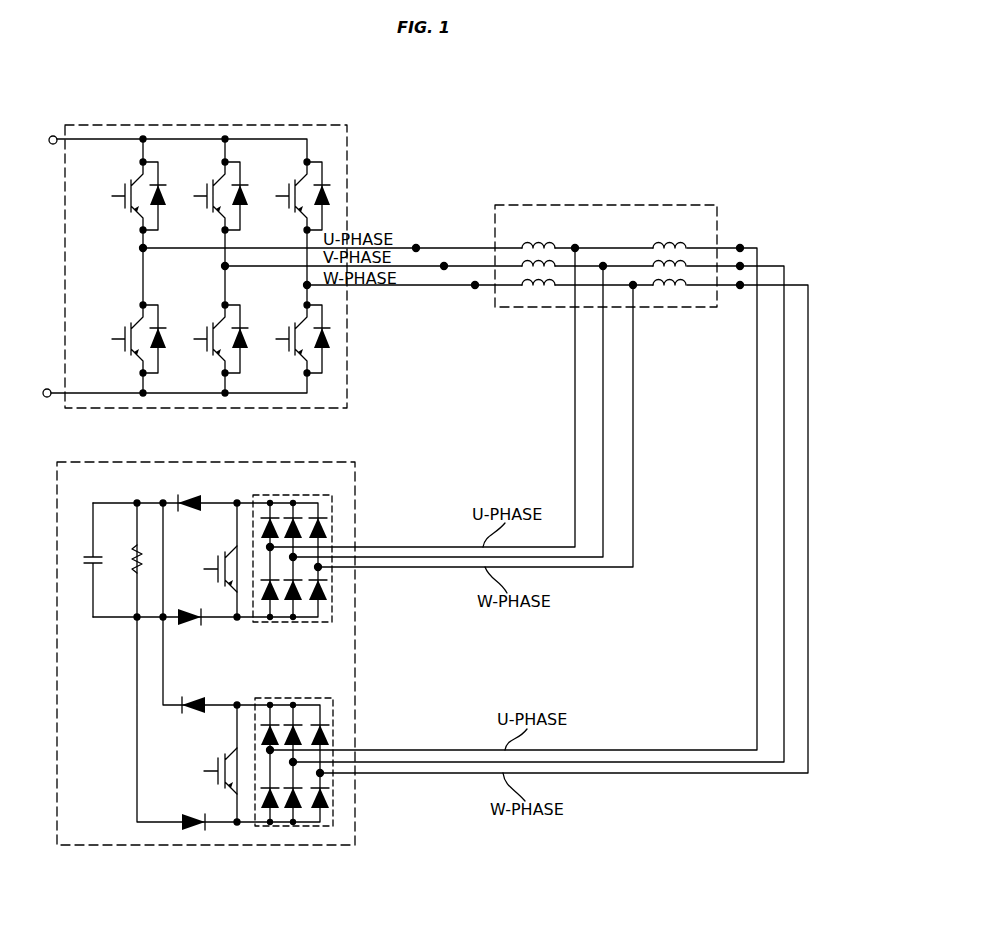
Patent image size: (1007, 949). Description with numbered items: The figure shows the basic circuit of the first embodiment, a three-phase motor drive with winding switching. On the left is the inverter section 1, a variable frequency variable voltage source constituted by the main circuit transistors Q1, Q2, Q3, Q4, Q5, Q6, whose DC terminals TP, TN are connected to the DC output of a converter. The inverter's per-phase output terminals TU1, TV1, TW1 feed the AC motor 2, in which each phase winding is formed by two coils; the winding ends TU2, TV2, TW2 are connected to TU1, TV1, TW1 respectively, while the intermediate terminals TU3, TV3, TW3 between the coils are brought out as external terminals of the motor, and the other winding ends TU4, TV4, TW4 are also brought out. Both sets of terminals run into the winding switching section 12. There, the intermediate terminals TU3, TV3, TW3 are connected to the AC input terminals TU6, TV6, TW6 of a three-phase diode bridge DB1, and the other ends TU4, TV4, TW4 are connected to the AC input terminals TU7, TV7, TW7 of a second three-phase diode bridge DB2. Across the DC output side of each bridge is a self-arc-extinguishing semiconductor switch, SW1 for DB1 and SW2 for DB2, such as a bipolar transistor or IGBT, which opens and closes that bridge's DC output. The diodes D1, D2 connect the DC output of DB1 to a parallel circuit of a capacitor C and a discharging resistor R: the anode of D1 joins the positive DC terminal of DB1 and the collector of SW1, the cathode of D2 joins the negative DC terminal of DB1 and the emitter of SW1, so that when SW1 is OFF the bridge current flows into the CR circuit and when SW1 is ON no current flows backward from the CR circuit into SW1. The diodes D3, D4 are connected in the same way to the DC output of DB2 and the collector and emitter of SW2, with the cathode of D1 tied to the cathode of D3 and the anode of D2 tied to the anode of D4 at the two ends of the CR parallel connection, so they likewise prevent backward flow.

The inverter section 1 is at (118, 125).
The AC motor 2 is at (515, 205).
The winding switching section 12 is at (140, 462).
The terminal TP is at (44, 128).
The terminal TN is at (40, 383).
The main circuit transistor Q1 is at (138, 196).
The main circuit transistor Q2 is at (220, 196).
The main circuit transistor Q3 is at (302, 196).
The main circuit transistor Q4 is at (138, 338).
The main circuit transistor Q5 is at (220, 338).
The main circuit transistor Q6 is at (302, 338).
The output terminal TU1 is at (117, 240).
The output terminal TV1 is at (204, 266).
The output terminal TW1 is at (284, 286).
The winding terminal end TU2 is at (425, 237).
The winding terminal end TV2 is at (444, 266).
The winding terminal end TW2 is at (466, 298).
The intermediate terminal TU3 is at (429, 384).
The intermediate terminal TV3 is at (466, 402).
The intermediate terminal TW3 is at (497, 425).
The winding terminal other end TU4 is at (739, 237).
The winding terminal other end TV4 is at (740, 266).
The winding terminal other end TW4 is at (740, 285).
The capacitor C is at (84, 560).
The discharging resistor R is at (122, 559).
The diode D1 is at (189, 493).
The diode D2 is at (189, 606).
The diode D3 is at (191, 694).
The diode D4 is at (191, 811).
The semiconductor switch SW1 is at (203, 569).
The semiconductor switch SW2 is at (203, 771).
The three-phase diode bridge DB1 is at (292, 548).
The three-phase diode bridge DB2 is at (294, 750).
The AC input terminal TU6 is at (270, 547).
The AC input terminal TV6 is at (293, 557).
The AC input terminal TW6 is at (318, 567).
The AC input terminal TU7 is at (270, 750).
The AC input terminal TV7 is at (293, 762).
The AC input terminal TW7 is at (320, 773).